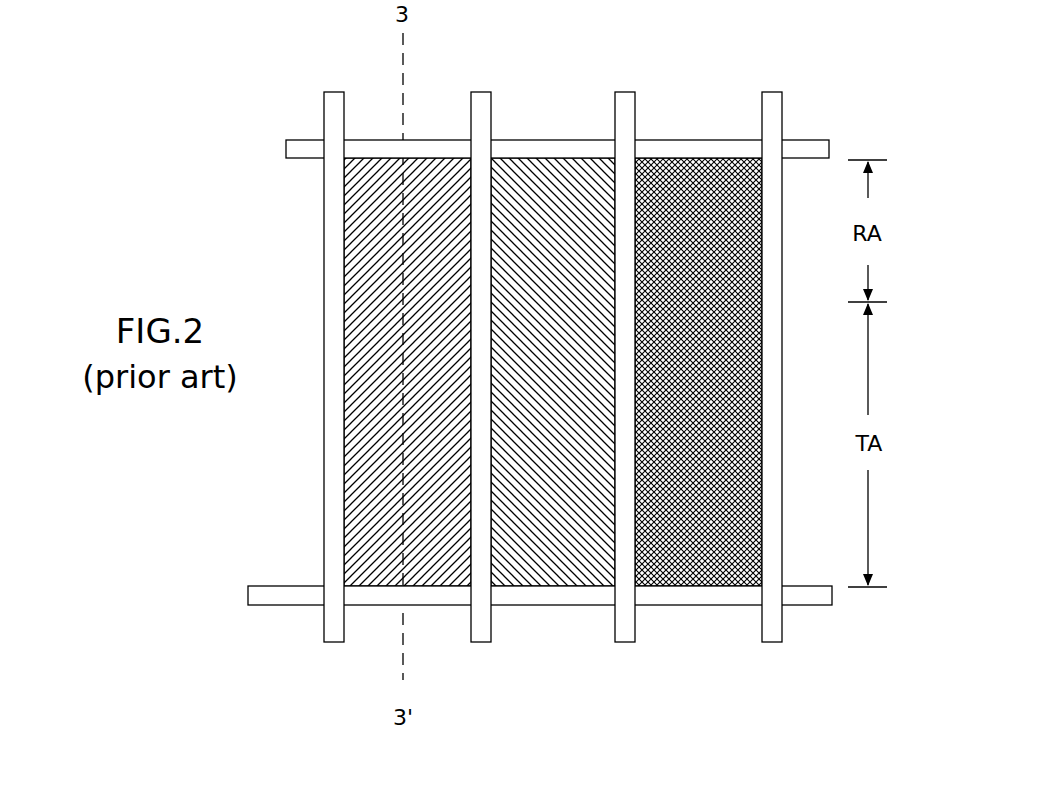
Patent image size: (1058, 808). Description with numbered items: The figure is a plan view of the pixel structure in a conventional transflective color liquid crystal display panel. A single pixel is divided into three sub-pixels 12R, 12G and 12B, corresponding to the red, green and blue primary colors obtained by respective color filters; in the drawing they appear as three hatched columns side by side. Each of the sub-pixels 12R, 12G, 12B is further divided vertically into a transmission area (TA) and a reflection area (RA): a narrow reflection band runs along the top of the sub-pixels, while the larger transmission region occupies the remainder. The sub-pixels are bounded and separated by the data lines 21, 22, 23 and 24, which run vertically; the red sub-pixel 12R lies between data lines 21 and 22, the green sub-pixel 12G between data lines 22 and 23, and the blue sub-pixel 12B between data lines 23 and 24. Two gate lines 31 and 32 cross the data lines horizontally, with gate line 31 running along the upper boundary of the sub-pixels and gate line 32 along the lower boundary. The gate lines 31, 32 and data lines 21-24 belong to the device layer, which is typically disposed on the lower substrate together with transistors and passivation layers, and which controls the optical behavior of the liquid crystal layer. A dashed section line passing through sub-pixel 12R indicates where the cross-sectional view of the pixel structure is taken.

The data line 21 is at (323, 110).
The data line 22 is at (492, 112).
The data line 23 is at (636, 112).
The data line 24 is at (783, 112).
The gate line 31 is at (307, 160).
The gate line 32 is at (308, 584).
The red sub-pixel 12R is at (423, 632).
The green sub-pixel 12G is at (543, 634).
The blue sub-pixel 12B is at (697, 634).